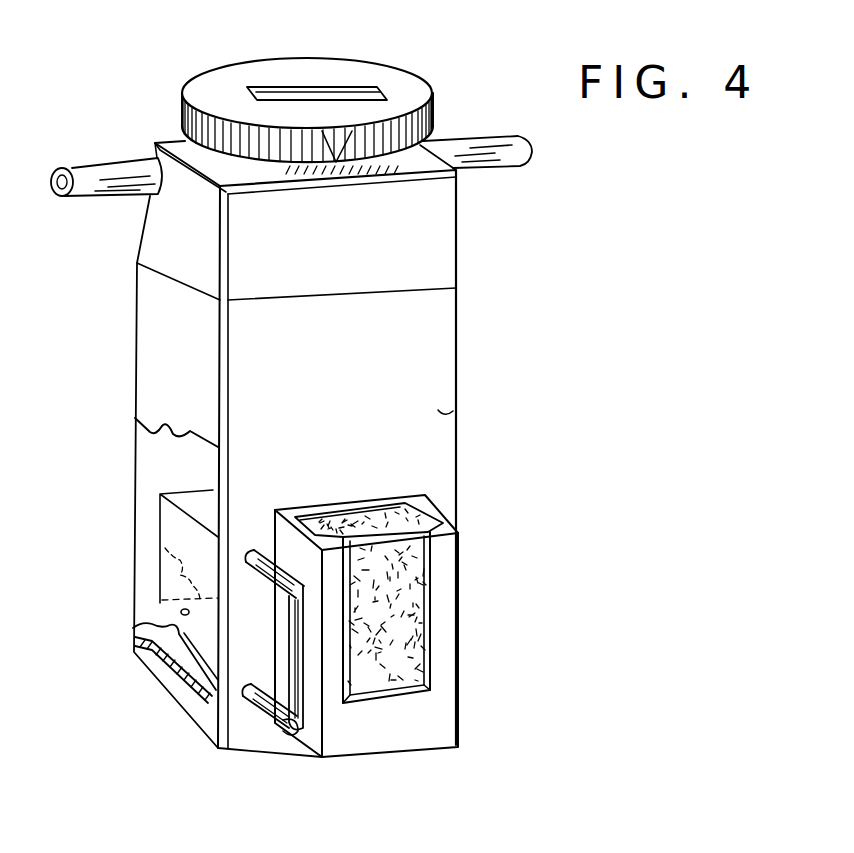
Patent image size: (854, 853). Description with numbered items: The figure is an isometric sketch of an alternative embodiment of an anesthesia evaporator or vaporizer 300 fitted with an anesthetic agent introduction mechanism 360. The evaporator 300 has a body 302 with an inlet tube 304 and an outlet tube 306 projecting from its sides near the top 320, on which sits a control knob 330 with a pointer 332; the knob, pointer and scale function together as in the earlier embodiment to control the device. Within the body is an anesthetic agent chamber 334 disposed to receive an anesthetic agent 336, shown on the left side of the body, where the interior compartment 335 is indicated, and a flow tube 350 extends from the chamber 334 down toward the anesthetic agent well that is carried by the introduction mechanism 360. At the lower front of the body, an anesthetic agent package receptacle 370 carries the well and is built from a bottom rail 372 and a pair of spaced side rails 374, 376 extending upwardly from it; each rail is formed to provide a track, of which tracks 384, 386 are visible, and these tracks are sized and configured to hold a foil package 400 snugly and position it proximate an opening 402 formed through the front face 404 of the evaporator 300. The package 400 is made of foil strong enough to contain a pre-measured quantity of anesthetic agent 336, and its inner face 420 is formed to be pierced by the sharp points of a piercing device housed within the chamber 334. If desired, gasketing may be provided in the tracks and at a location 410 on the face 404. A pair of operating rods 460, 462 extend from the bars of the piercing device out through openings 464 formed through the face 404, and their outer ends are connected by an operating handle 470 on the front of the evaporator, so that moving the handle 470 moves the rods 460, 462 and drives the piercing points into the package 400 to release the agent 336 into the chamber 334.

The anesthesia evaporator 300 is at (525, 238).
The body 302 is at (447, 305).
The inlet tube 304 is at (100, 160).
The outlet tube 306 is at (507, 142).
The top 320 is at (165, 135).
The control knob 330 is at (290, 81).
The pointer 332 is at (434, 118).
The anesthetic agent chamber 334 is at (336, 162).
The interior compartment 335 is at (170, 530).
The anesthetic agent 336 is at (192, 568).
The flow tube 350 is at (148, 627).
The anesthetic agent introduction mechanism 360 is at (460, 569).
The anesthetic agent package receptacle 370 is at (442, 602).
The bottom rail 372 is at (420, 718).
The side rail 374 is at (458, 622).
The side rail 376 is at (342, 748).
The track 384 is at (440, 527).
The track 386 is at (325, 515).
The package 400 is at (393, 540).
The opening 402 is at (352, 498).
The front face 404 is at (450, 412).
The gasketing location 410 is at (392, 498).
The inner face 420 is at (380, 498).
The operating rod 460 is at (191, 617).
The operating rod 462 is at (261, 570).
The openings 464 is at (255, 552).
The operating handle 470 is at (273, 725).